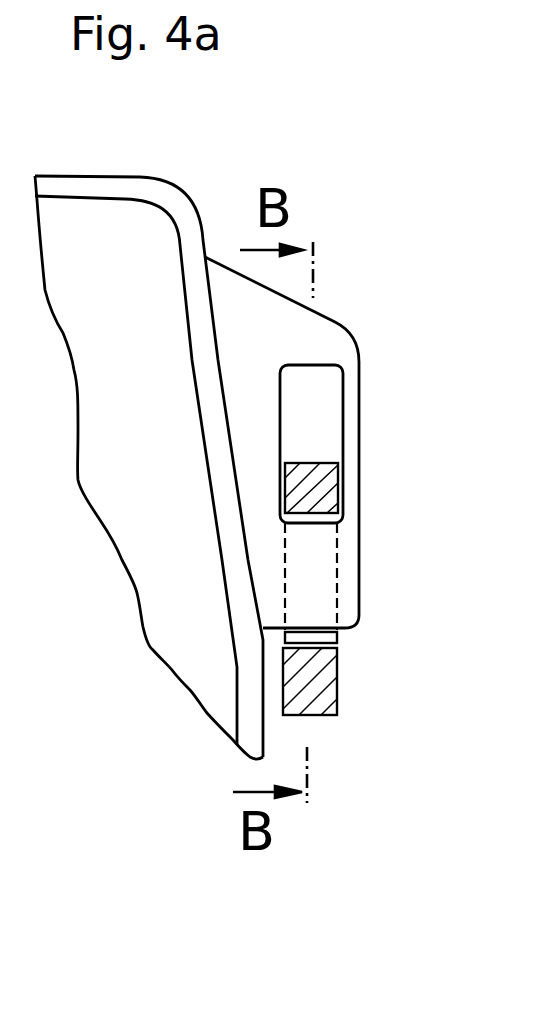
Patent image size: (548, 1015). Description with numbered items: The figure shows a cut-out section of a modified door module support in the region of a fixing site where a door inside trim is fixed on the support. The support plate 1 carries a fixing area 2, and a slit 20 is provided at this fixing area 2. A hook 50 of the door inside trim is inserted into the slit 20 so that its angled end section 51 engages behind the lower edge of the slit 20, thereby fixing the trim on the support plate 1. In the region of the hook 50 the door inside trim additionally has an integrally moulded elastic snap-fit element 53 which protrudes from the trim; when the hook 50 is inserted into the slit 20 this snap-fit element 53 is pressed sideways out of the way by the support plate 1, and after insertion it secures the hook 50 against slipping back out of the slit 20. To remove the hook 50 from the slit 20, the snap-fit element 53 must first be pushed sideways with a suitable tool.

The support plate 1 is at (95, 242).
The fixing area 2 is at (300, 342).
The slit 20 is at (317, 405).
The hook 50 is at (307, 492).
The angled end section 51 is at (322, 637).
The snap-fit element 53 is at (315, 685).